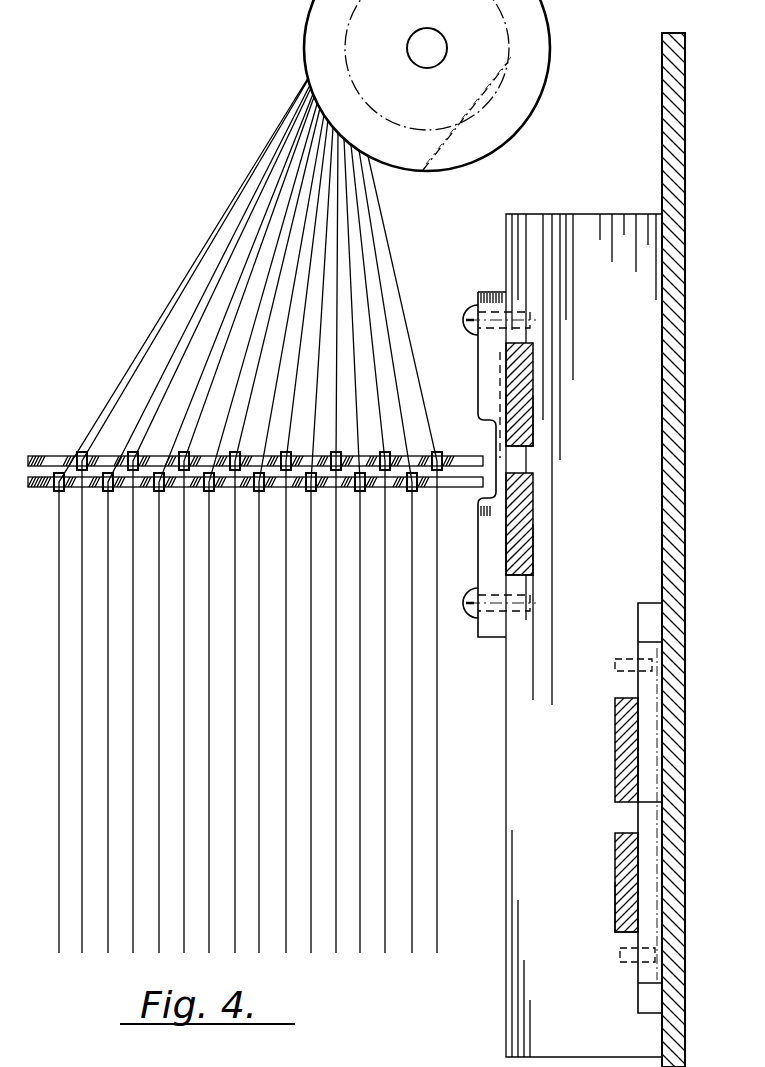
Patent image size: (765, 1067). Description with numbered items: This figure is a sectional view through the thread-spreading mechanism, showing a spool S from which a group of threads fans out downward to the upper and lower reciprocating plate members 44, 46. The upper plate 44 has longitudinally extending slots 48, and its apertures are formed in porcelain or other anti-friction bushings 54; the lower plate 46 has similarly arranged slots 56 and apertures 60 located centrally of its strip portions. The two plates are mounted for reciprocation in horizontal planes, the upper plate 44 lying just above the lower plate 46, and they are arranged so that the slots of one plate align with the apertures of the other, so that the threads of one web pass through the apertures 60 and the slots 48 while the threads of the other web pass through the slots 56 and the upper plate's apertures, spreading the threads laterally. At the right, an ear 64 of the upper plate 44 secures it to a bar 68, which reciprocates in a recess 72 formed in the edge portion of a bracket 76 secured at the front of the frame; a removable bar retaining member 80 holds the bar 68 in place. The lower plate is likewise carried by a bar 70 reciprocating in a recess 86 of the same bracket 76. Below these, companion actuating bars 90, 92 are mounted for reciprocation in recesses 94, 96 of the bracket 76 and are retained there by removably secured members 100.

The spool S is at (298, 53).
The upper reciprocating plate member 44 is at (33, 455).
The lower reciprocating plate member 46 is at (33, 490).
The longitudinally extending slots 48 is at (68, 455).
The anti-friction bushing 54 is at (128, 452).
The slots 56 is at (74, 489).
The apertures 60 is at (107, 490).
The ear 64 is at (500, 357).
The bar 68 is at (530, 432).
The bar 70 is at (528, 559).
The recess 72 is at (530, 362).
The bracket 76 is at (573, 213).
The removable bar retaining member 80 is at (489, 292).
The recess 86 is at (531, 488).
The companion actuating bar 90 is at (633, 784).
The companion actuating bar 92 is at (628, 883).
The recess 94 is at (617, 757).
The recess 96 is at (615, 854).
The removably secured members 100 is at (652, 694).